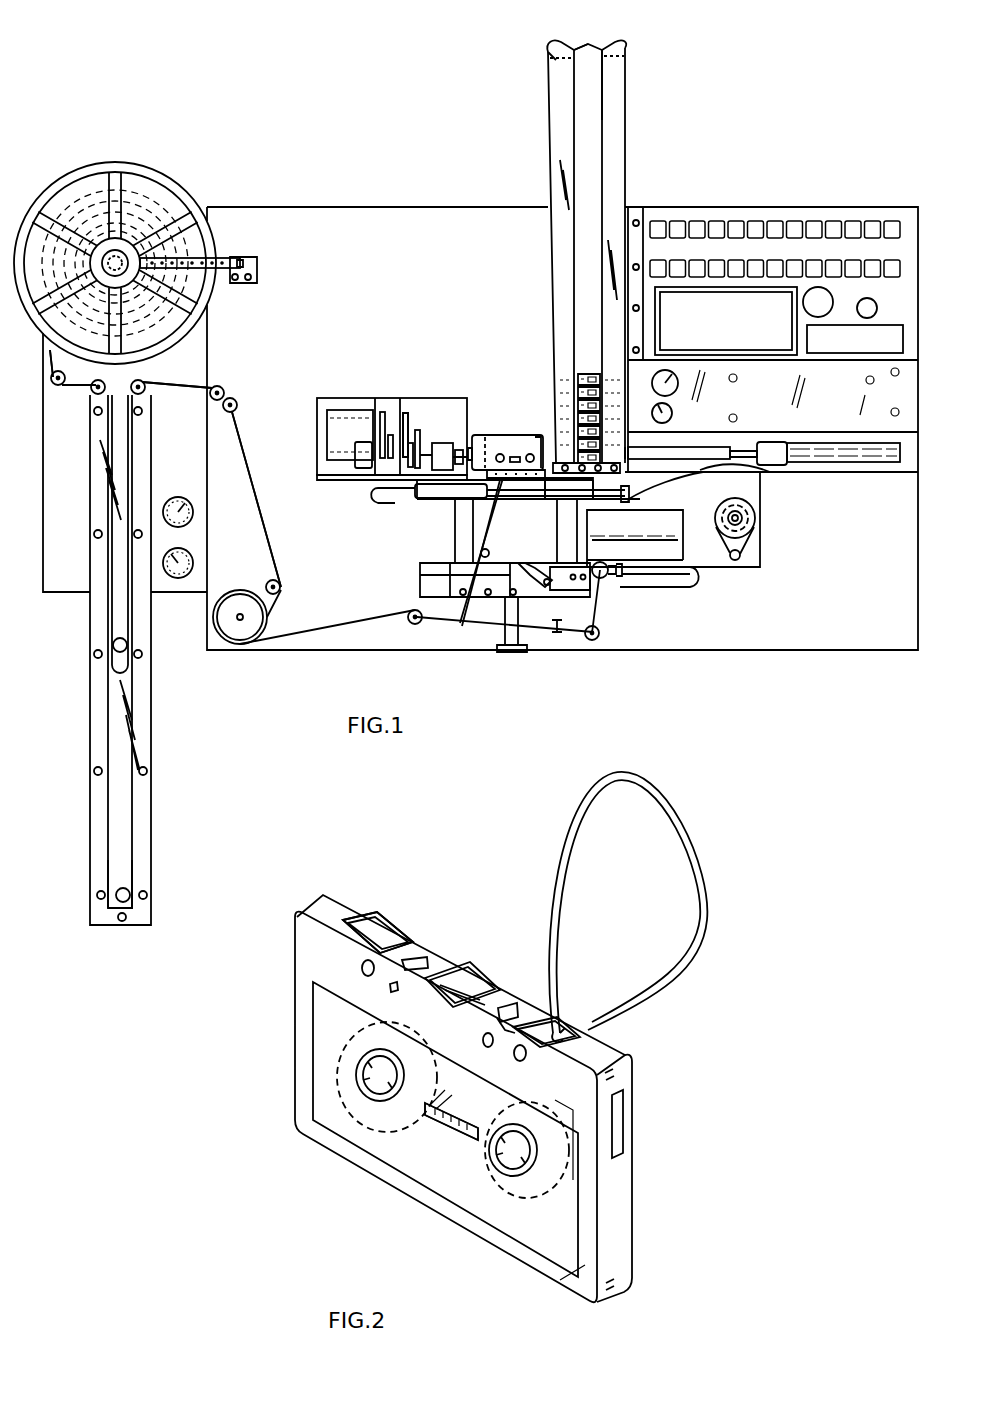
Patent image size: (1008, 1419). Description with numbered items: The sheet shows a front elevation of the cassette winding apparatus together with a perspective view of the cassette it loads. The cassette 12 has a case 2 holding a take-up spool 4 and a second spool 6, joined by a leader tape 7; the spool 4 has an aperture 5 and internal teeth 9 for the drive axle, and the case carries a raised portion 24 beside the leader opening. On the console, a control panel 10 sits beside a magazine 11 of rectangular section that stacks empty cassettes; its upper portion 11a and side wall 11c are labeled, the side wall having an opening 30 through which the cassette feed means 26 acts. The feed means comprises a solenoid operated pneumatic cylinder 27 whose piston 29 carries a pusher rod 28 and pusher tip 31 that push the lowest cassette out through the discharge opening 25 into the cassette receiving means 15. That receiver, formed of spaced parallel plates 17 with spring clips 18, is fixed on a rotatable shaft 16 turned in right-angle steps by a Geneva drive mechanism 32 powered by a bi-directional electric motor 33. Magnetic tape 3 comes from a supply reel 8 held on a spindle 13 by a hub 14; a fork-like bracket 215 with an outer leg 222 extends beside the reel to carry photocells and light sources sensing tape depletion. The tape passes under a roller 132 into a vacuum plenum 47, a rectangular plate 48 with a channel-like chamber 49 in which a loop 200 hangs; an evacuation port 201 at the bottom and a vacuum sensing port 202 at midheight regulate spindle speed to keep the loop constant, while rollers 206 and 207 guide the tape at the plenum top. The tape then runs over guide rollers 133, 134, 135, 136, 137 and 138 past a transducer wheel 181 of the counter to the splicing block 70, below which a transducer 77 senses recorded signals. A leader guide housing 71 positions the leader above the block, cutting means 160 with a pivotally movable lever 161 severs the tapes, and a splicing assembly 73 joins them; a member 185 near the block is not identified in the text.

In FIG. 2, the case 2 is at (633, 1190).
In FIG. 1, the magnetic tape 3 is at (187, 379).
In FIG. 2, the take-up spool 4 is at (530, 1197).
In FIG. 2, the aperture 5 is at (518, 1182).
In FIG. 2, the spool 6 is at (363, 1113).
In FIG. 2, the leader tape 7 is at (547, 840).
In FIG. 1, the supply reel 8 is at (167, 203).
In FIG. 2, the internal teeth 9 is at (520, 1155).
In FIG. 1, the control panel 10 is at (793, 208).
In FIG. 1, the magazine 11 is at (13, 177).
In FIG. 1, the chute top flare 11a is at (597, 53).
In FIG. 1, the side wall 11c is at (625, 178).
In FIG. 1, the cassette 12 is at (547, 468).
In FIG. 2, the cassette 12 is at (637, 1054).
In FIG. 1, the spindle 13 is at (173, 193).
In FIG. 1, the hub 14 is at (123, 253).
In FIG. 1, the cassette receiving means 15 is at (500, 440).
In FIG. 1, the rotatable shaft 16 is at (490, 412).
In FIG. 1, the parallel plates 17 is at (508, 443).
In FIG. 1, the spring clips 18 is at (537, 447).
In FIG. 1, the raised portion 24 is at (513, 473).
In FIG. 2, the raised portion 24 is at (437, 1024).
In FIG. 1, the discharge opening 25 is at (573, 485).
In FIG. 1, the cassette feed means 26 is at (837, 445).
In FIG. 1, the solenoid operated pneumatic cylinder 27 is at (753, 443).
In FIG. 1, the pusher rod 28 is at (723, 460).
In FIG. 1, the piston 29 is at (770, 472).
In FIG. 1, the opening 30 is at (627, 447).
In FIG. 1, the pusher tip 31 is at (633, 447).
In FIG. 1, the Geneva drive mechanism 32 is at (418, 447).
In FIG. 1, the bi-directional electric motor 33 is at (333, 443).
In FIG. 1, the vacuum plenum 47 is at (158, 781).
In FIG. 1, the rectangular plate 48 is at (153, 867).
In FIG. 1, the channel-like chamber 49 is at (123, 867).
In FIG. 1, the splicing block 70 is at (427, 563).
In FIG. 1, the leader guide housing 71 is at (433, 507).
In FIG. 1, the splicing assembly 73 is at (770, 541).
In FIG. 1, the transducer 77 is at (555, 620).
In FIG. 1, the roller 132 is at (66, 394).
In FIG. 1, the guide roller 133 is at (224, 388).
In FIG. 1, the guide roller 134 is at (237, 402).
In FIG. 1, the guide roller 135 is at (291, 585).
In FIG. 1, the guide roller 136 is at (410, 622).
In FIG. 1, the guide roller 137 is at (600, 634).
In FIG. 1, the guide roller 138 is at (603, 573).
In FIG. 1, the cutting means 160 is at (542, 562).
In FIG. 1, the pivotally movable lever 161 is at (540, 567).
In FIG. 1, the transducer wheel 181 is at (237, 640).
In FIG. 1, the link rod 185 is at (467, 566).
In FIG. 1, the loop 200 is at (118, 680).
In FIG. 1, the evacuation port 201 is at (120, 890).
In FIG. 1, the vacuum sensing port 202 is at (118, 645).
In FIG. 1, the roller 206 is at (187, 337).
In FIG. 1, the roller 207 is at (193, 368).
In FIG. 1, the fork-like bracket 215 is at (245, 257).
In FIG. 1, the outer leg 222 is at (200, 256).